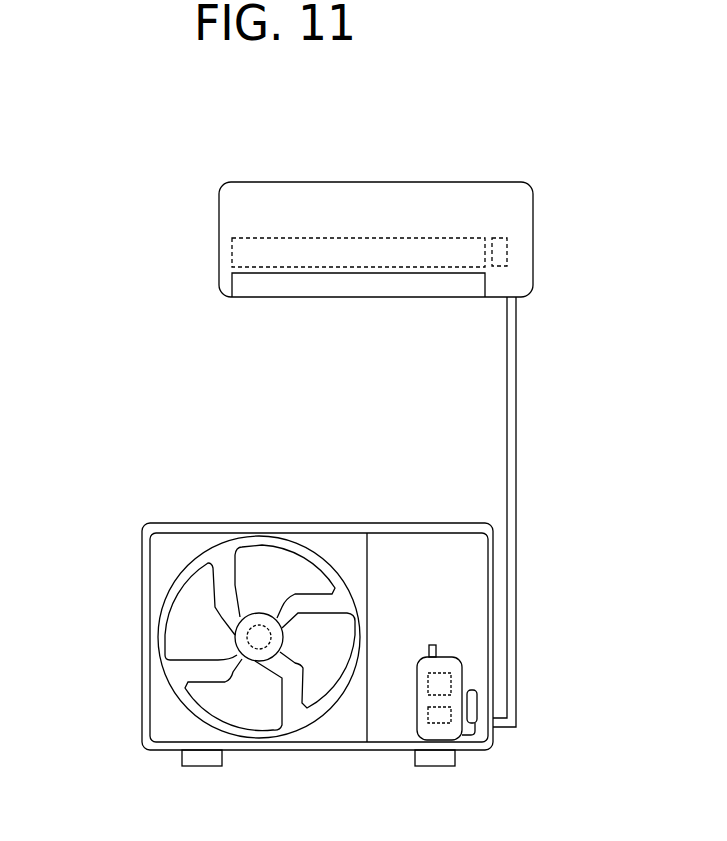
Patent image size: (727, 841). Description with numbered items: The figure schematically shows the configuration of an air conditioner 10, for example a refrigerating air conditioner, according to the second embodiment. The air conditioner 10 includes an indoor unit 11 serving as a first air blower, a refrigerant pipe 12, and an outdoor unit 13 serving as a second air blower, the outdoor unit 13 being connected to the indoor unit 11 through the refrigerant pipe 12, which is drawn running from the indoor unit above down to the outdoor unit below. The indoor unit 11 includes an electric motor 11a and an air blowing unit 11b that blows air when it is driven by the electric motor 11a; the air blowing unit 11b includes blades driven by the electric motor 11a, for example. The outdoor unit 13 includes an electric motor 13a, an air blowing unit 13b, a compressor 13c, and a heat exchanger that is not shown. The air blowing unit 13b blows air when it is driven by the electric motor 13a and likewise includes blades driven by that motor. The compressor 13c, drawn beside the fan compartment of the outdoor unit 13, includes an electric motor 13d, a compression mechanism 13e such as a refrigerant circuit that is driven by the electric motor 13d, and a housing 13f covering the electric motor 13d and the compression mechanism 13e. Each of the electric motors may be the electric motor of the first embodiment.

The air conditioner 10 is at (98, 138).
The indoor unit 11 is at (371, 182).
The electric motor 11a is at (507, 252).
The air blowing unit 11b is at (232, 253).
The refrigerant pipe 12 is at (516, 433).
The outdoor unit 13 is at (312, 523).
The electric motor 13a is at (259, 645).
The air blowing unit 13b is at (193, 634).
The compressor 13c is at (411, 642).
The electric motor 13d is at (437, 676).
The compression mechanism 13e is at (442, 715).
The housing 13f is at (418, 725).